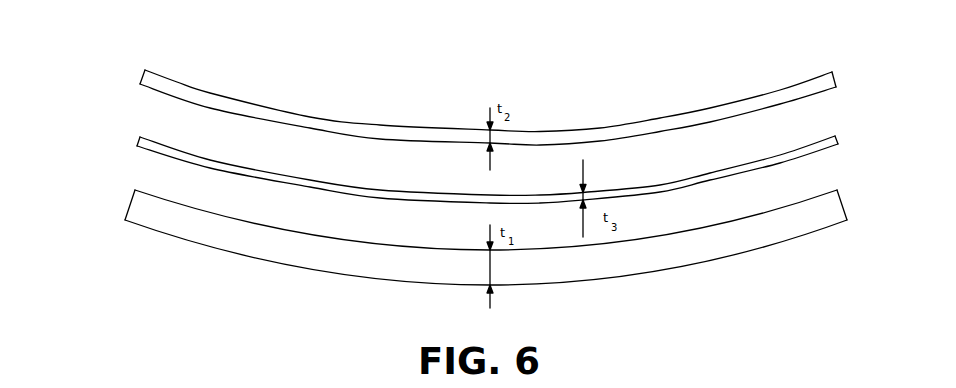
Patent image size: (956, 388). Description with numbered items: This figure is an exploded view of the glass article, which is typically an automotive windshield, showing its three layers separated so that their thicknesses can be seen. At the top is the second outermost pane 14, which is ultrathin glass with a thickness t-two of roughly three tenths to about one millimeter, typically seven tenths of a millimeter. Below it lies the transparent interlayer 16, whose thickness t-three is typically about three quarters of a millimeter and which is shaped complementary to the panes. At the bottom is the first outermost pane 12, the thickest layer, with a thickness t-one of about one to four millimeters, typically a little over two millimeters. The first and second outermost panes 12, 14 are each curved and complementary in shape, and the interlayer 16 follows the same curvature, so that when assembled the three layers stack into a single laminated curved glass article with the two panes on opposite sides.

The first outermost pane 12 is at (128, 208).
The second outermost pane 14 is at (140, 84).
The transparent interlayer 16 is at (138, 142).